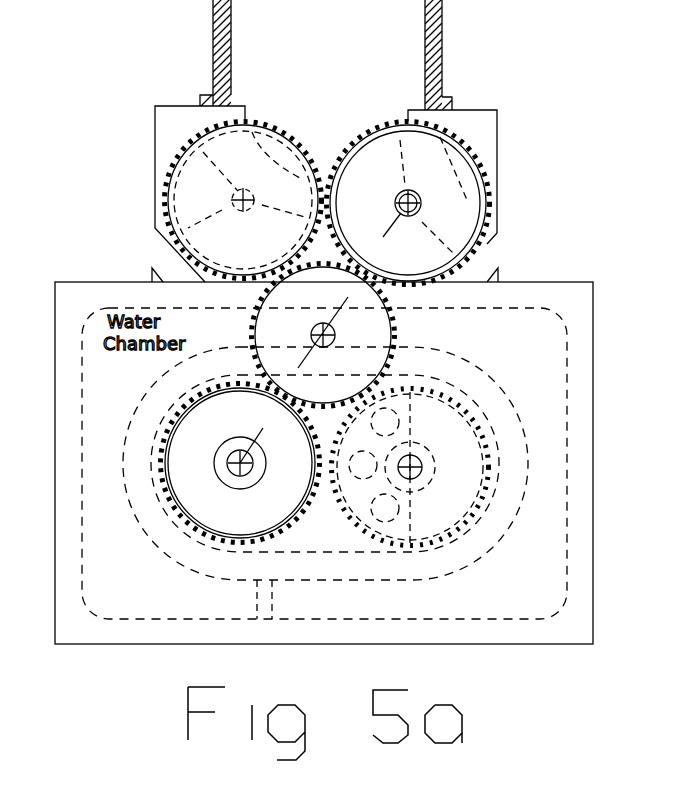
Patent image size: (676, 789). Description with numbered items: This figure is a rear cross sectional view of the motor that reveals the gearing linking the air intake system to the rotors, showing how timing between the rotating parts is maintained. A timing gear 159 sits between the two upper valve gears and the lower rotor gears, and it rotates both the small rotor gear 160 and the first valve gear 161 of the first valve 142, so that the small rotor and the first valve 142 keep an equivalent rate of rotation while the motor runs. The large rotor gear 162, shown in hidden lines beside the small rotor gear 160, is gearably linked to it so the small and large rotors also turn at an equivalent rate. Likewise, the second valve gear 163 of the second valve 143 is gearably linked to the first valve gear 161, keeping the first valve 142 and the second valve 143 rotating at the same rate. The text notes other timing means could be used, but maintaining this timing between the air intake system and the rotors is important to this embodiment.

The first valve 142 is at (408, 203).
The second valve 143 is at (243, 200).
The timing gear 159 is at (399, 331).
The small rotor gear 160 is at (203, 540).
The first valve gear 161 is at (351, 102).
The large rotor gear 162 is at (440, 542).
The second valve gear 163 is at (264, 121).